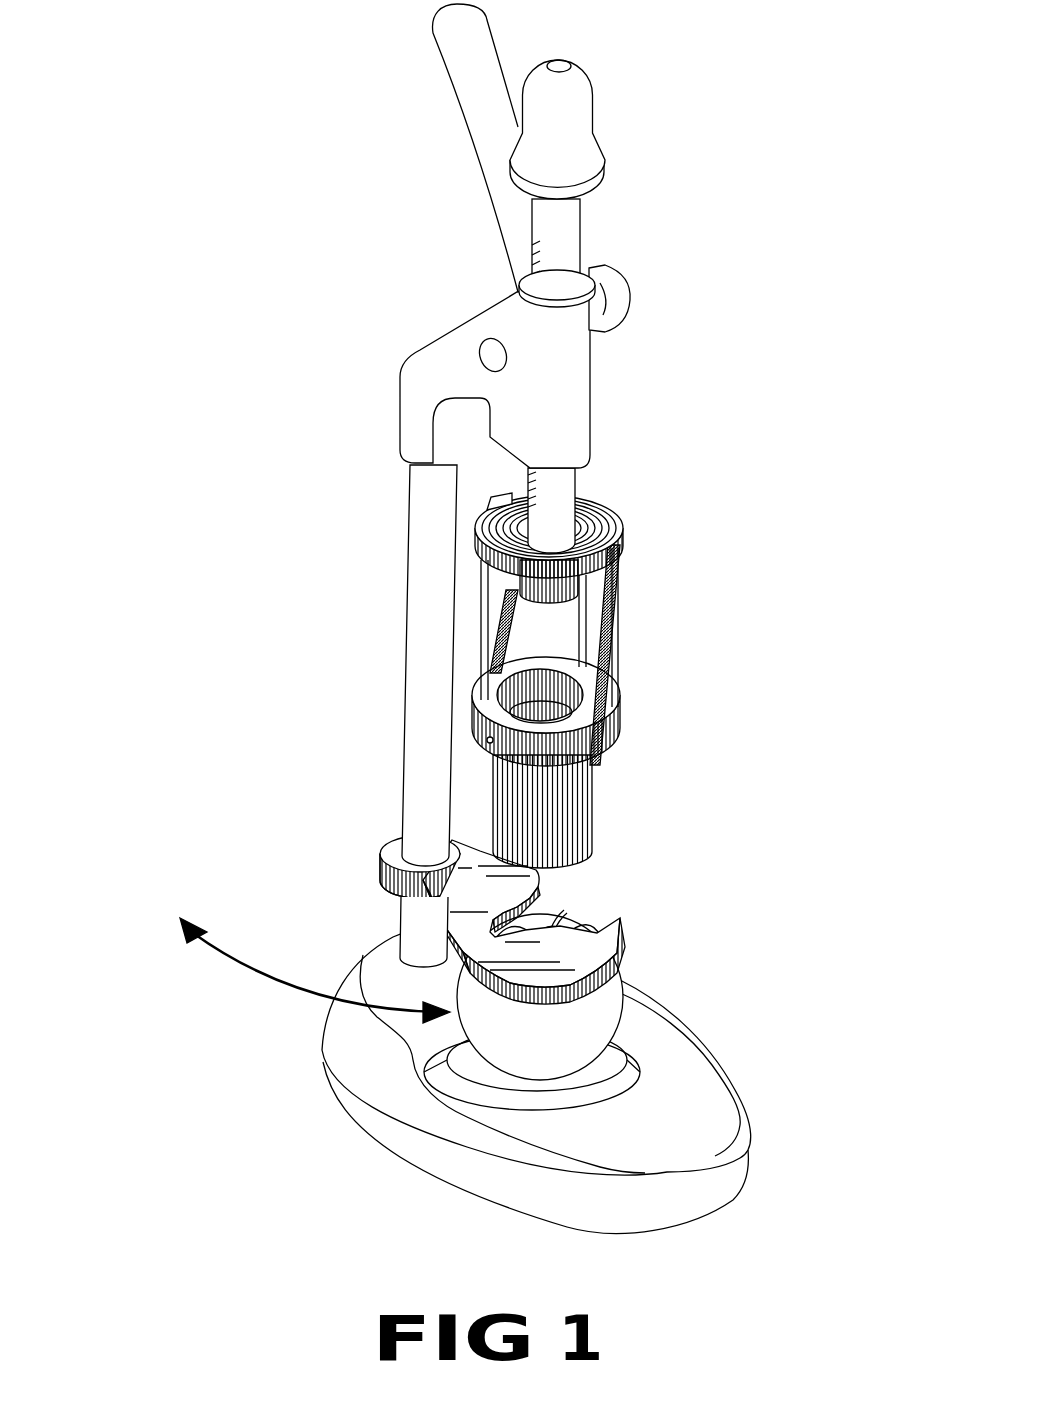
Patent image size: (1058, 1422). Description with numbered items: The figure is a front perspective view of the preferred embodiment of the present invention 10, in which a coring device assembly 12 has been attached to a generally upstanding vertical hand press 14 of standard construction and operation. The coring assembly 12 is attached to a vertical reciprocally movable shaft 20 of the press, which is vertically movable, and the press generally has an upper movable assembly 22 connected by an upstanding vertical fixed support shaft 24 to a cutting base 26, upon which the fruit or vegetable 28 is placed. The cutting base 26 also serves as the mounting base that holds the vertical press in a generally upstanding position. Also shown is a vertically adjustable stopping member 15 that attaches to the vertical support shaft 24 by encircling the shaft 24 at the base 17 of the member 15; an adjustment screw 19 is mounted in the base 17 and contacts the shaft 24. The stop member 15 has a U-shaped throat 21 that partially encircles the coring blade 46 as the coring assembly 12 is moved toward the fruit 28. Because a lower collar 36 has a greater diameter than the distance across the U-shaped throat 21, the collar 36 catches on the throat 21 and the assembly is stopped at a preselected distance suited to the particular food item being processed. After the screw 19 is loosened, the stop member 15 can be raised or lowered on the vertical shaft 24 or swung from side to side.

The present invention 10 is at (492, 618).
The coring device assembly 12 is at (619, 680).
The vertical hand press 14 is at (573, 373).
The vertically adjustable stopping member 15 is at (598, 957).
The base of the stopping member 17 is at (397, 847).
The adjustment screw 19 is at (382, 882).
The vertical reciprocally movable shaft 20 is at (558, 502).
The U-shaped throat 21 is at (513, 965).
The upper movable assembly 22 is at (573, 100).
The vertical fixed support shaft 24 is at (410, 665).
The cutting base 26 is at (353, 1080).
The fruit or vegetable 28 is at (597, 1025).
The lower collar 36 is at (557, 755).
The coring blade 46 is at (585, 828).